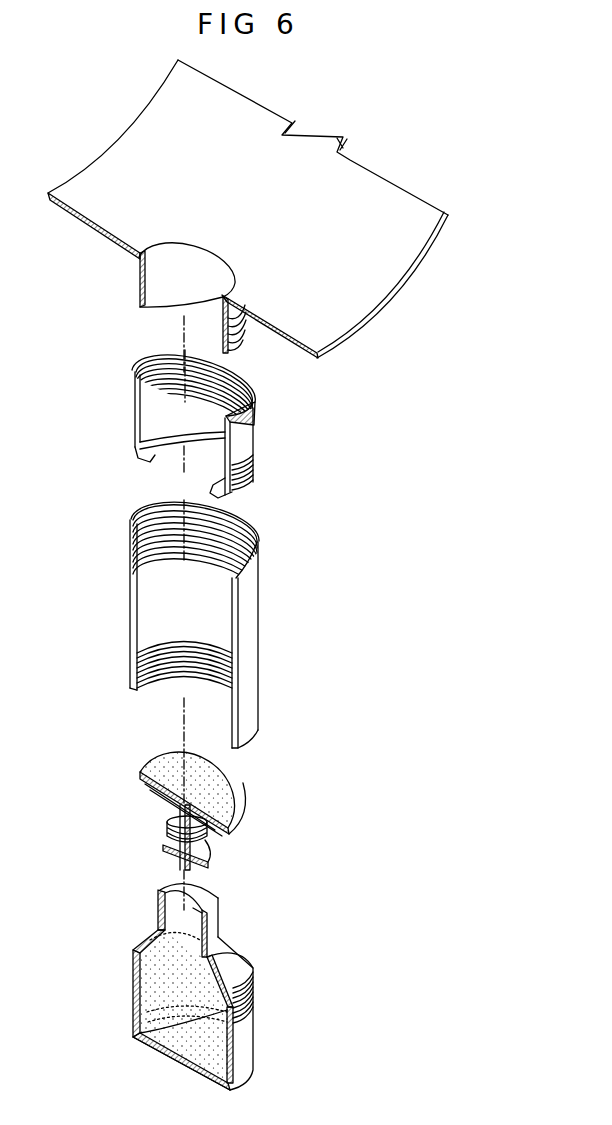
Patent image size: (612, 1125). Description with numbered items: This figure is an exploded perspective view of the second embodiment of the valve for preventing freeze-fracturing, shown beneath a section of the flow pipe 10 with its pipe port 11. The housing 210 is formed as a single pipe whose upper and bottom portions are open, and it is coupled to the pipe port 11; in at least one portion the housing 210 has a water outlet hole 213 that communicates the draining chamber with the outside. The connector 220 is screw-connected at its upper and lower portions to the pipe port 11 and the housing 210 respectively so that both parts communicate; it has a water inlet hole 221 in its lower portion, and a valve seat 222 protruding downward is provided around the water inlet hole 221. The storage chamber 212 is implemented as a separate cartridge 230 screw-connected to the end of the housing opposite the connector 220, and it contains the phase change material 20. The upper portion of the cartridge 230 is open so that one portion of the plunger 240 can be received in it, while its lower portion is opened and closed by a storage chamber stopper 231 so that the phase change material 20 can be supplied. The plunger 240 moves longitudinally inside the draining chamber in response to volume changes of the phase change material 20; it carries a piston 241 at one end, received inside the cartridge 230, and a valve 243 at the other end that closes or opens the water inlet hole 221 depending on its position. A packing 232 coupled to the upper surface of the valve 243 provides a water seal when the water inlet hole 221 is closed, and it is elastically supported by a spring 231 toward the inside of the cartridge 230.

The flow pipe 10 is at (128, 157).
The pipe port 11 is at (140, 271).
The phase change material 20 is at (155, 982).
The housing 210 is at (258, 644).
The storage chamber 212 is at (207, 970).
The water outlet hole 213 is at (137, 647).
The connector 220 is at (245, 427).
The water inlet hole 221 is at (215, 455).
The valve seat 222 is at (147, 462).
The cartridge 230 is at (242, 1043).
The storage chamber stopper 231 is at (207, 840).
The packing 232 is at (188, 760).
The plunger 240 is at (247, 787).
The piston 241 is at (163, 847).
The valve 243 is at (157, 785).